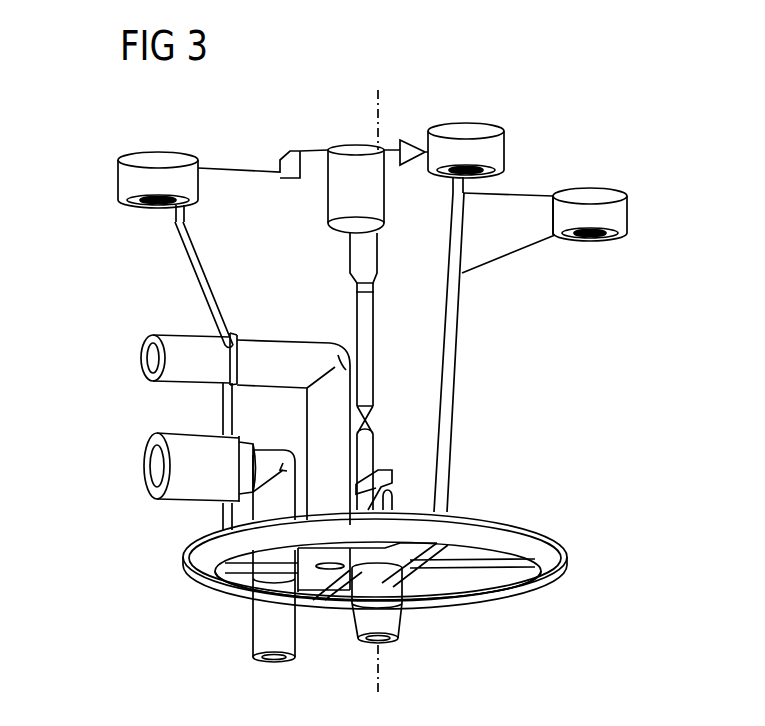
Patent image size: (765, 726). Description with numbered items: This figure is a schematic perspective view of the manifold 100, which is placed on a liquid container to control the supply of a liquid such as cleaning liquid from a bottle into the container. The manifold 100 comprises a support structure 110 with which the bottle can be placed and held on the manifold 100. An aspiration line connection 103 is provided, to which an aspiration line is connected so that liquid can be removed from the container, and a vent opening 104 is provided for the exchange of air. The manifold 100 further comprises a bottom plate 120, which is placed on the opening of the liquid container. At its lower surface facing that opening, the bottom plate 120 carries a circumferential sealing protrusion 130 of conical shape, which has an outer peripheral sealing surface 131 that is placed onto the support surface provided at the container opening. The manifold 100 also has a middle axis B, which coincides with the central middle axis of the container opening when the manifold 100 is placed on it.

The manifold 100 is at (488, 358).
The aspiration line connection 103 is at (176, 497).
The vent opening 104 is at (175, 345).
The support structure 110 is at (580, 192).
The bottom plate 120 is at (518, 522).
The circumferential sealing protrusion 130 is at (531, 588).
The outer peripheral sealing surface 131 is at (540, 560).
The middle axis B is at (380, 115).